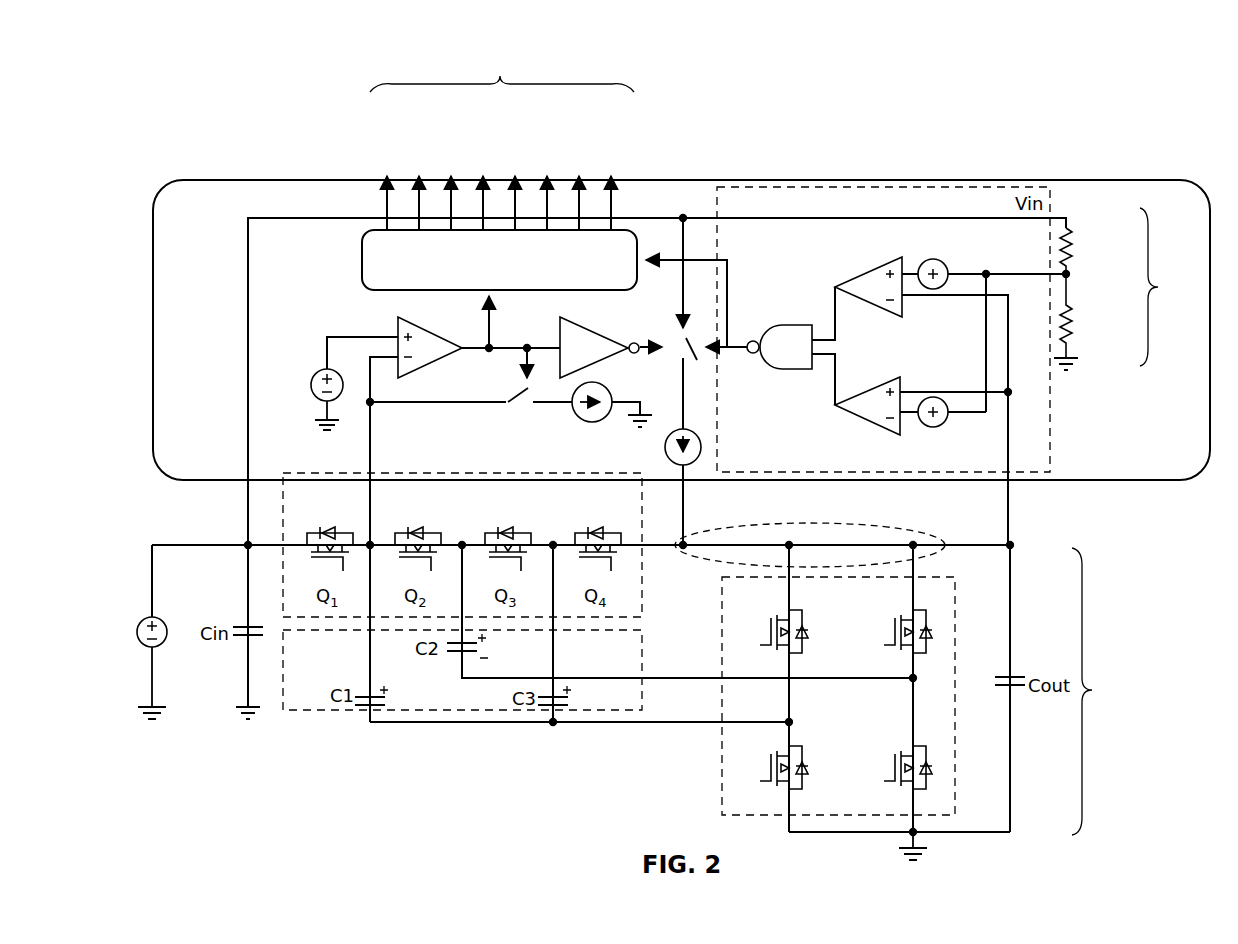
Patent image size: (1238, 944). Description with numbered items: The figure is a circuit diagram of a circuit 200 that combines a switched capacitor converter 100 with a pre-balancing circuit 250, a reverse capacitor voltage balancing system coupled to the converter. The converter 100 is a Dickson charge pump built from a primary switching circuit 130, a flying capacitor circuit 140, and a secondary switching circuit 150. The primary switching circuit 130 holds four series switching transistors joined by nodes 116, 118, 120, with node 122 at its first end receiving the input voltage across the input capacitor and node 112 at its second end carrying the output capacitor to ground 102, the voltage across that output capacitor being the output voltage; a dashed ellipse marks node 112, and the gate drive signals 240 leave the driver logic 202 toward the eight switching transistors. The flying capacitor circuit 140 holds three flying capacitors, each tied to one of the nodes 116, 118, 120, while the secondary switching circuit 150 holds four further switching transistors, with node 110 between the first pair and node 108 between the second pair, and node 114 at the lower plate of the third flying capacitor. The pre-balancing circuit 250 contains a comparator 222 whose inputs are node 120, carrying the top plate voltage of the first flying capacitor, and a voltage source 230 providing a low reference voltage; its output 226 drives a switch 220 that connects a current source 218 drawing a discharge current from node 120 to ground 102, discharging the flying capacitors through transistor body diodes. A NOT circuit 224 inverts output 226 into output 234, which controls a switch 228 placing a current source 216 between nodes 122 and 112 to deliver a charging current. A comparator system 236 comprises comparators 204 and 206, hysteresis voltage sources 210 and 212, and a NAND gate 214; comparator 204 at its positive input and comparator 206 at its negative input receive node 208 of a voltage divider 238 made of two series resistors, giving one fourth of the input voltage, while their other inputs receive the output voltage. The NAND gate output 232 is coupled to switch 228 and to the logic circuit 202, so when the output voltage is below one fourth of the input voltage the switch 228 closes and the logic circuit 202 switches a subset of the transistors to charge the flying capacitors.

The switched capacitor converter 100 is at (1106, 691).
The ground 102 is at (1086, 385).
The node between Q7 and Q8 108 is at (918, 676).
The node between Q5 and Q6 110 is at (793, 720).
The node 112 is at (898, 530).
The node at C3 114 is at (552, 728).
The node 116 is at (556, 540).
The node 118 is at (460, 540).
The node 120 is at (368, 540).
The node 122 is at (244, 548).
The primary switching circuit 130 is at (648, 612).
The flying capacitor circuit 140 is at (648, 706).
The secondary switching circuit 150 is at (958, 798).
The circuit 200 is at (268, 104).
The logic circuit 202 is at (362, 258).
The comparator 204 is at (862, 282).
The comparator 206 is at (862, 420).
The node 208 is at (1072, 278).
The hysteresis voltage source 210 is at (944, 262).
The hysteresis voltage source 212 is at (946, 422).
The NAND gate 214 is at (795, 372).
The current source 216 is at (703, 444).
The current source 218 is at (614, 404).
The switch 220 is at (520, 400).
The comparator 222 is at (432, 362).
The NOT circuit 224 is at (606, 362).
The output 226 is at (480, 334).
The switch 228 is at (683, 303).
The voltage source 230 is at (318, 374).
The output 232 is at (754, 340).
The output 234 is at (678, 338).
The comparator system 236 is at (948, 186).
The voltage divider 238 is at (1131, 287).
The gate drive signals 240 is at (502, 140).
The pre-balancing circuit 250 is at (218, 180).